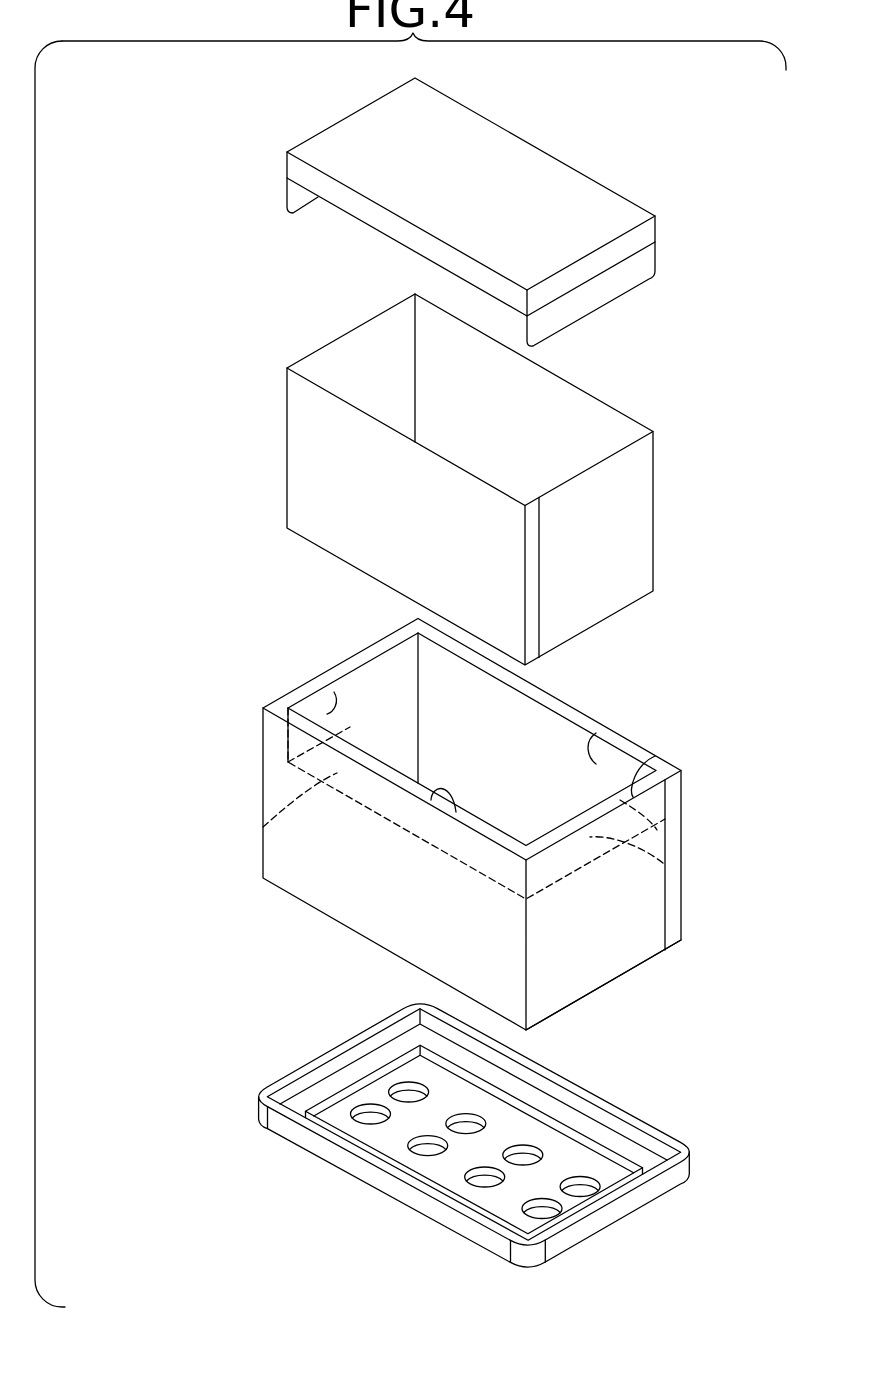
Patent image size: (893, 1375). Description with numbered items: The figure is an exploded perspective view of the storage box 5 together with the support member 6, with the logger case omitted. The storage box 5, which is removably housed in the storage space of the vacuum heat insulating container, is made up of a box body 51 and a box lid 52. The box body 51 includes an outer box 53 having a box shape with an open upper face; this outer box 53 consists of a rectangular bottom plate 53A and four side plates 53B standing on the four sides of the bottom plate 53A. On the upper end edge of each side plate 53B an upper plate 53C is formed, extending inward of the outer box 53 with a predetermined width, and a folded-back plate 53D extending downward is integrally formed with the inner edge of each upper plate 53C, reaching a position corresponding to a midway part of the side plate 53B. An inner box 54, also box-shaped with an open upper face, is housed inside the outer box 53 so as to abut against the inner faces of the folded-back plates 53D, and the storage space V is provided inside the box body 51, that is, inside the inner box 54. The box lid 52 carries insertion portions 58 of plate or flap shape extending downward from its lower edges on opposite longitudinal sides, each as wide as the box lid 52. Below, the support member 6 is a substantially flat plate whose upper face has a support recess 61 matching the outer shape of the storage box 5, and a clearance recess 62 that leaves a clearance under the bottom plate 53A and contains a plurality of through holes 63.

The storage box 5 is at (125, 352).
The support member 6 is at (231, 1125).
The box body 51 is at (156, 436).
The box lid 52 is at (289, 164).
The outer box 53 is at (236, 782).
The bottom plate 53A is at (605, 950).
The side plate 53B is at (380, 737).
The upper plate 53C is at (348, 668).
The folded-back plate 53D is at (334, 692).
The inner box 54 is at (312, 487).
The insertion portion 58 is at (297, 198).
The support recess 61 is at (318, 1092).
The clearance recess 62 is at (500, 1212).
The through hole 63 is at (403, 1083).
The storage space V is at (538, 428).